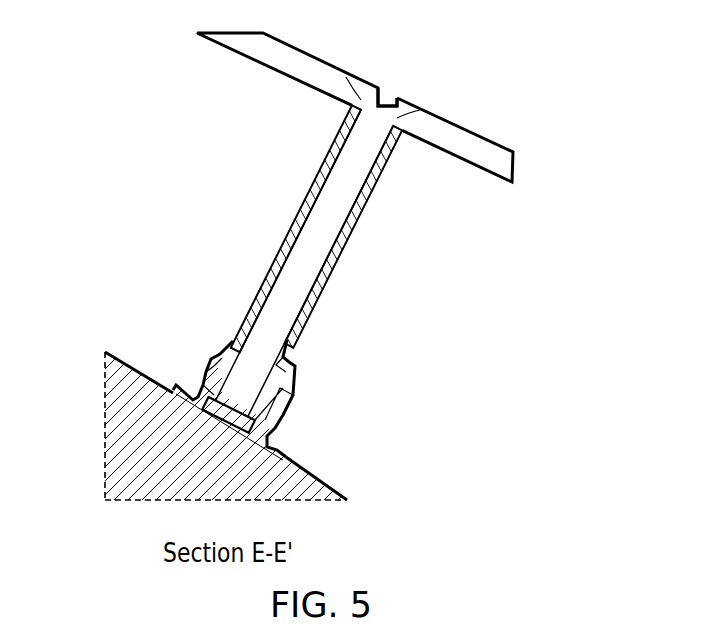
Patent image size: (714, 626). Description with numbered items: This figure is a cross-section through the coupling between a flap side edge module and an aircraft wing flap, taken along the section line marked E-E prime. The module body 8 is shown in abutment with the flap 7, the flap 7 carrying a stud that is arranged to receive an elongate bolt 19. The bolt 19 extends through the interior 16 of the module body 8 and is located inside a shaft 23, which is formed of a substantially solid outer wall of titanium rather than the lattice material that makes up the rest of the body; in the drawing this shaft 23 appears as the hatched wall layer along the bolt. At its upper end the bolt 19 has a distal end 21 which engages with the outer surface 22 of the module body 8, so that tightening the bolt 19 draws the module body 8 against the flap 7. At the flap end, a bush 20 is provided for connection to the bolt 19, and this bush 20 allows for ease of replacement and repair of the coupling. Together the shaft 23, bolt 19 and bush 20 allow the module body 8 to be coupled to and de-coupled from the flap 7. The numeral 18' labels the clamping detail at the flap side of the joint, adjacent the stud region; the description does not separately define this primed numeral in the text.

The flap 7 is at (143, 467).
The module body 8 is at (530, 113).
The interior of the module body 16 is at (288, 128).
The left clamping element 18' is at (179, 357).
The bolt 19 is at (317, 225).
The bush 20 is at (267, 430).
The distal end 21 is at (407, 92).
The outer surface 22 is at (452, 134).
The shaft 23 is at (272, 274).